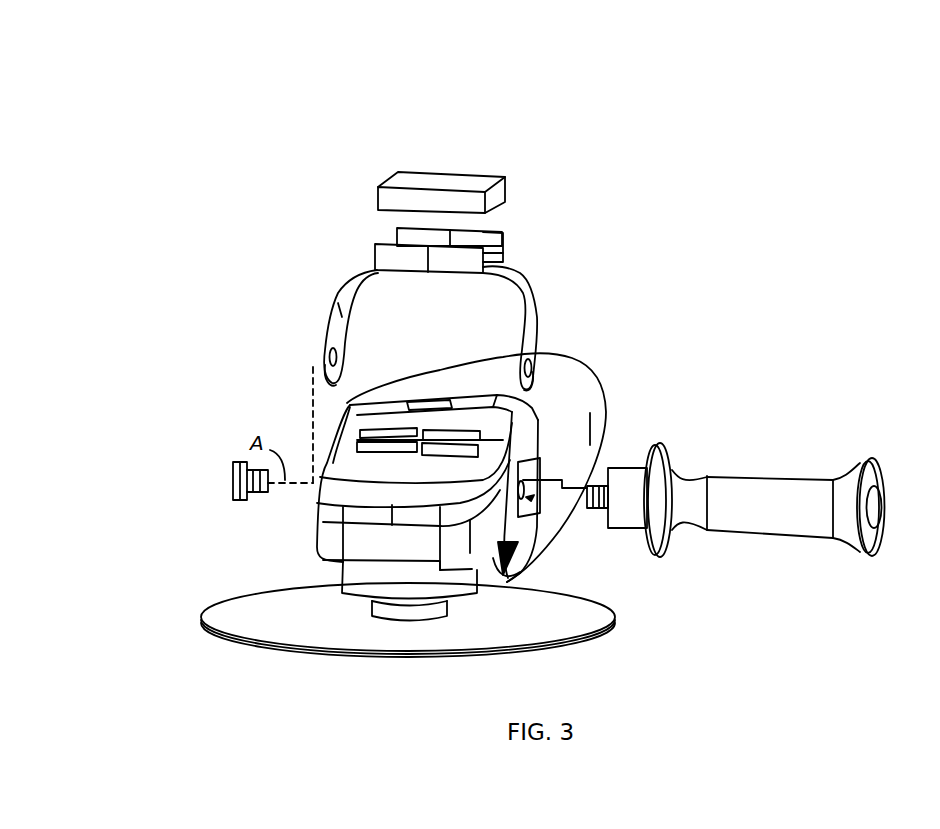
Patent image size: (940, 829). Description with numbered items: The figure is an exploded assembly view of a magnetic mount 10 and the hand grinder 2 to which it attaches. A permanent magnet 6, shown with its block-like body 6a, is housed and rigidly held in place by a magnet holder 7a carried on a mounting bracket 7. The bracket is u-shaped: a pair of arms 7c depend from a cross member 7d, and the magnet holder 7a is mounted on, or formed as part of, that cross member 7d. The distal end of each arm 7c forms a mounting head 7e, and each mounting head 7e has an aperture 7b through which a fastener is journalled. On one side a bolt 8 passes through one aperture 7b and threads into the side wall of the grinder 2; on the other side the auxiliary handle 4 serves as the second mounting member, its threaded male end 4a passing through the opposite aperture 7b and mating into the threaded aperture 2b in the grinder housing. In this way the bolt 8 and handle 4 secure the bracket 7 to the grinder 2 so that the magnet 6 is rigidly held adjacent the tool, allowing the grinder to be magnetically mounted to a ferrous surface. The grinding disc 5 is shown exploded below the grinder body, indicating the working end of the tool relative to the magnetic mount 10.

The magnetic mount 10 is at (794, 220).
The hand grinder 2 is at (575, 411).
The threaded aperture 2b is at (531, 493).
The auxiliary handle 4 is at (800, 488).
The threaded male end 4a is at (588, 486).
The grinding disc 5 is at (200, 620).
The permanent magnet 6 is at (441, 177).
The attachment body 6a is at (473, 180).
The mounting bracket 7 is at (536, 264).
The magnet holder 7a is at (507, 240).
The aperture 7b is at (340, 357).
The arm 7c is at (337, 294).
The cross member 7d is at (495, 237).
The mounting head 7e is at (323, 350).
The bolt 8 is at (232, 488).